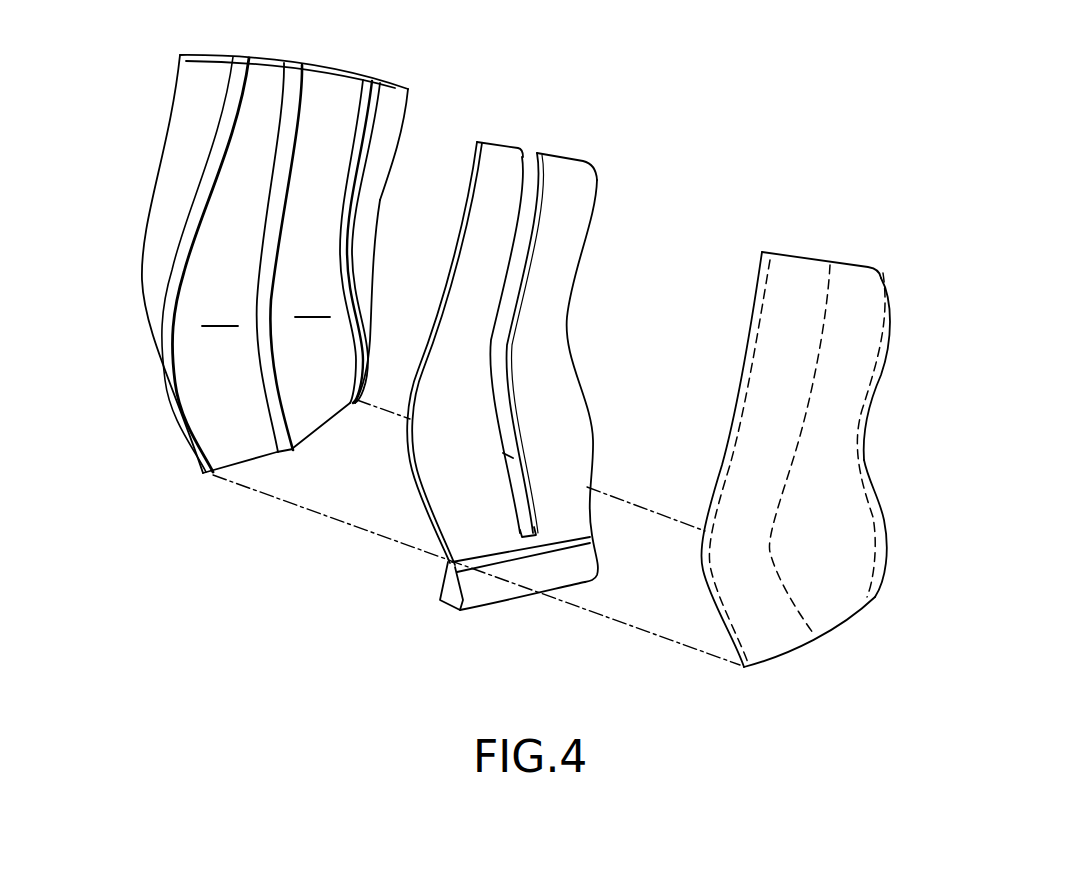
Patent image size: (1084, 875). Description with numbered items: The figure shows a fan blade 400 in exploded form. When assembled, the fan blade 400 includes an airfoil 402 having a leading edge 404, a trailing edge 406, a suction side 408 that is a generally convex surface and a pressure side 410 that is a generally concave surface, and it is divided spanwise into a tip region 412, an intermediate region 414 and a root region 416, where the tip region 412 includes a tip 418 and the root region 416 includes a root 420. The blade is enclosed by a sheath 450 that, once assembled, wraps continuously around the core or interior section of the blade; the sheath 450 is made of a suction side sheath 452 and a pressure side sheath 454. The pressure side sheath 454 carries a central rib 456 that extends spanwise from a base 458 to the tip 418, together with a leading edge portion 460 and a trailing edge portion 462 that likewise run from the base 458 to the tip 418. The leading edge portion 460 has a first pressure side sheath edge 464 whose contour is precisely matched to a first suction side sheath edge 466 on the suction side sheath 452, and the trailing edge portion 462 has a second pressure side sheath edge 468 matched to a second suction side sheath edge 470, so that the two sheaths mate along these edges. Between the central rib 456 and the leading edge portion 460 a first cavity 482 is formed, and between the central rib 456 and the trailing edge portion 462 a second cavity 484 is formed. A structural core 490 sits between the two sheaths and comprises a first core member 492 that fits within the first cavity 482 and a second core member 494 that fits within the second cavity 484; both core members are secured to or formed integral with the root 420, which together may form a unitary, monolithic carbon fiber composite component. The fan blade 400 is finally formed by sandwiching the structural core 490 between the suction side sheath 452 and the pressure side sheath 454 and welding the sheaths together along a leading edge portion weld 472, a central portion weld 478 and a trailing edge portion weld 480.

The fan blade 400 is at (118, 80).
The airfoil 402 is at (146, 444).
The leading edge 404 is at (148, 250).
The trailing edge 406 is at (370, 237).
The suction side 408 is at (837, 455).
The pressure side 410 is at (198, 154).
The tip region 412 is at (428, 88).
The intermediate region 414 is at (118, 283).
The root region 416 is at (413, 597).
The tip 418 is at (343, 67).
The root 420 is at (465, 614).
The sheath 450 is at (900, 574).
The suction side sheath 452 is at (880, 365).
The pressure side sheath 454 is at (157, 305).
The central rib 456 is at (289, 443).
The base 458 is at (252, 462).
The leading edge portion 460 is at (177, 213).
The trailing edge portion 462 is at (385, 137).
The first pressure side sheath edge 464 is at (228, 118).
The first suction side sheath edge 466 is at (712, 580).
The second pressure side sheath edge 468 is at (378, 197).
The second suction side sheath edge 470 is at (885, 500).
The leading edge portion weld 472 is at (710, 512).
The central portion weld 478 is at (778, 500).
The trailing edge portion weld 480 is at (872, 568).
The first cavity 482 is at (220, 313).
The second cavity 484 is at (313, 304).
The structural core 490 is at (588, 322).
The first core member 492 is at (460, 278).
The second core member 494 is at (565, 247).